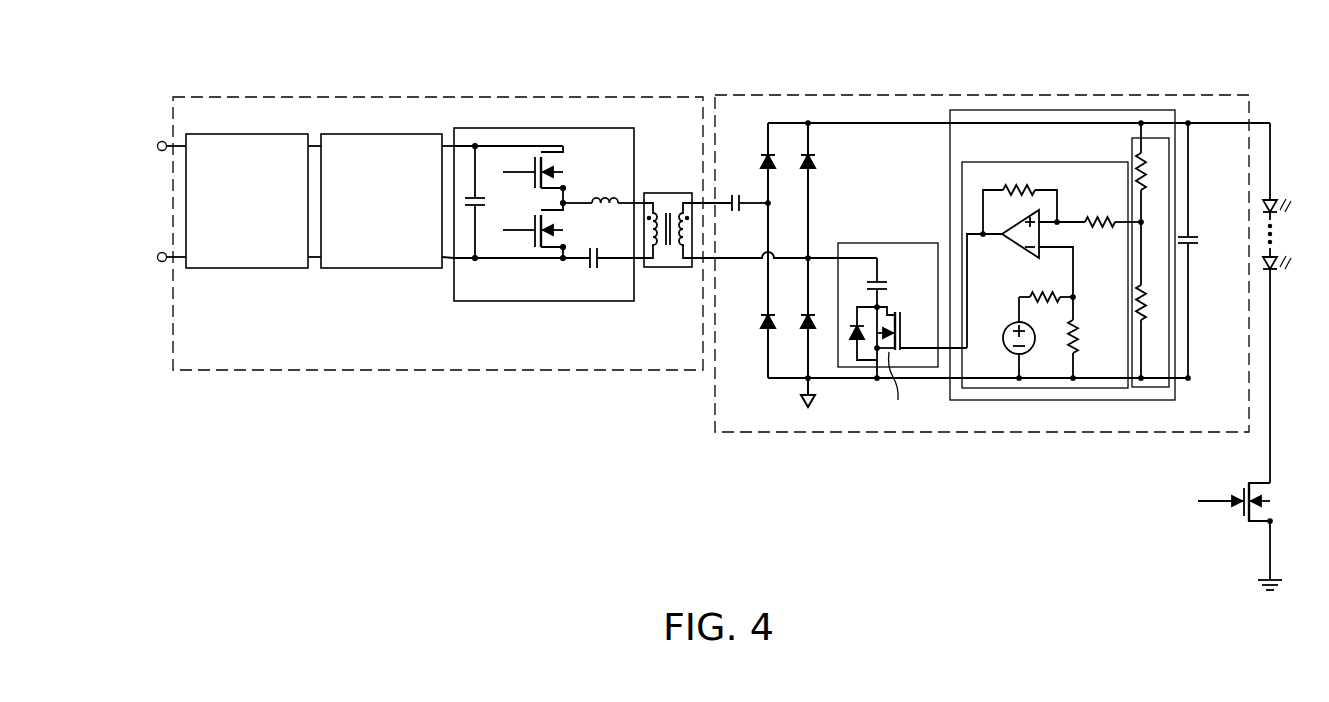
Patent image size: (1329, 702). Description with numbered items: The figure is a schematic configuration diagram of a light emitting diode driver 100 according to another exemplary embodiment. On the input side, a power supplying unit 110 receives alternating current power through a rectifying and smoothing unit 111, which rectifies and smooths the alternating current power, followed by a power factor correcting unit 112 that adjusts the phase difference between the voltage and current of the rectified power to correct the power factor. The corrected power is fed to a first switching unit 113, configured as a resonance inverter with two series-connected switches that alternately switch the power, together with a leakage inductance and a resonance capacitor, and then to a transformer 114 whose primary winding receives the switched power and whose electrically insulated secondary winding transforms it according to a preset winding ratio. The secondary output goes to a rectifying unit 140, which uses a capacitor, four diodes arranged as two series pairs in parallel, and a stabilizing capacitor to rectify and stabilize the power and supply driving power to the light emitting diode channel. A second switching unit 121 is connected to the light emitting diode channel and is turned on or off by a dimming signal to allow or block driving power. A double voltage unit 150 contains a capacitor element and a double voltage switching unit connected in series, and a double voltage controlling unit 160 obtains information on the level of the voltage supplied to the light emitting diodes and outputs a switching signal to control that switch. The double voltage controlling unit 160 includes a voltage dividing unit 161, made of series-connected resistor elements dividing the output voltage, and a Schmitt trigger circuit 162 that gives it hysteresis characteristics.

The LED driver 100 is at (942, 44).
The power supplying unit 110 is at (508, 97).
The rectifying and smoothing unit 111 is at (245, 268).
The power factor correcting unit 112 is at (380, 268).
The first switching unit 113 is at (575, 301).
The transformer 114 is at (672, 193).
The second switching unit 121 is at (1257, 527).
The rectifying unit 140 is at (844, 95).
The double voltage unit 150 is at (900, 243).
The double voltage controlling unit 160 is at (950, 166).
The voltage dividing unit 161 is at (1152, 138).
The Schmitt trigger circuit 162 is at (1037, 162).